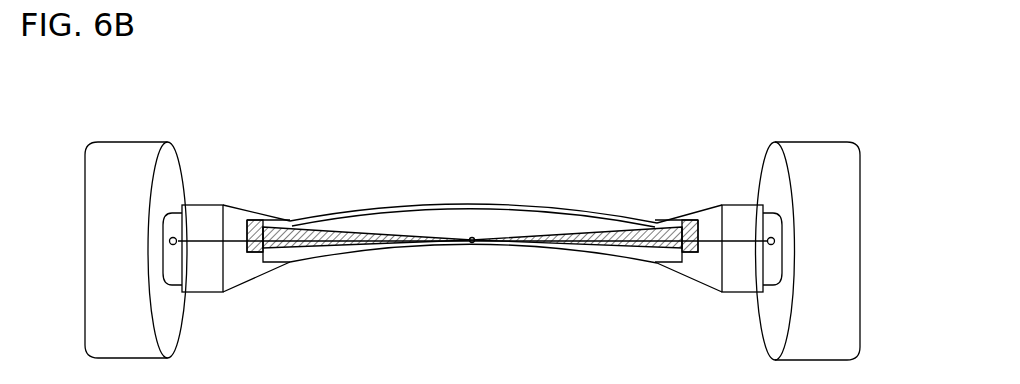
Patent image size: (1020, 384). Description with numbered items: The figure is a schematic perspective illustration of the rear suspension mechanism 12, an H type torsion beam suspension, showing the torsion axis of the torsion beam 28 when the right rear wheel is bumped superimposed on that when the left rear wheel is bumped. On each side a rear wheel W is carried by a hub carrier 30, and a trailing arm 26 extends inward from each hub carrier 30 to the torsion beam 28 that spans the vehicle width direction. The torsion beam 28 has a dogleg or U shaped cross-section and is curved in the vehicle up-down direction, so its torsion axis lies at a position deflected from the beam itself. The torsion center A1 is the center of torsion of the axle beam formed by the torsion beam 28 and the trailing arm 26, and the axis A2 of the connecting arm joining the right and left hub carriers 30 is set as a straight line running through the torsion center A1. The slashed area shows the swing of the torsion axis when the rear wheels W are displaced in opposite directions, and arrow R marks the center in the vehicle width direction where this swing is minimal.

The rear suspension mechanism 12 is at (519, 193).
The trailing arm 26 is at (236, 205).
The torsion beam 28 is at (440, 206).
The hub carrier 30 is at (170, 268).
The rear wheel W is at (138, 142).
The torsion center A1 is at (472, 236).
The axis of the connecting arm A2 is at (235, 248).
The arrow indicating minimal swing R is at (472, 257).